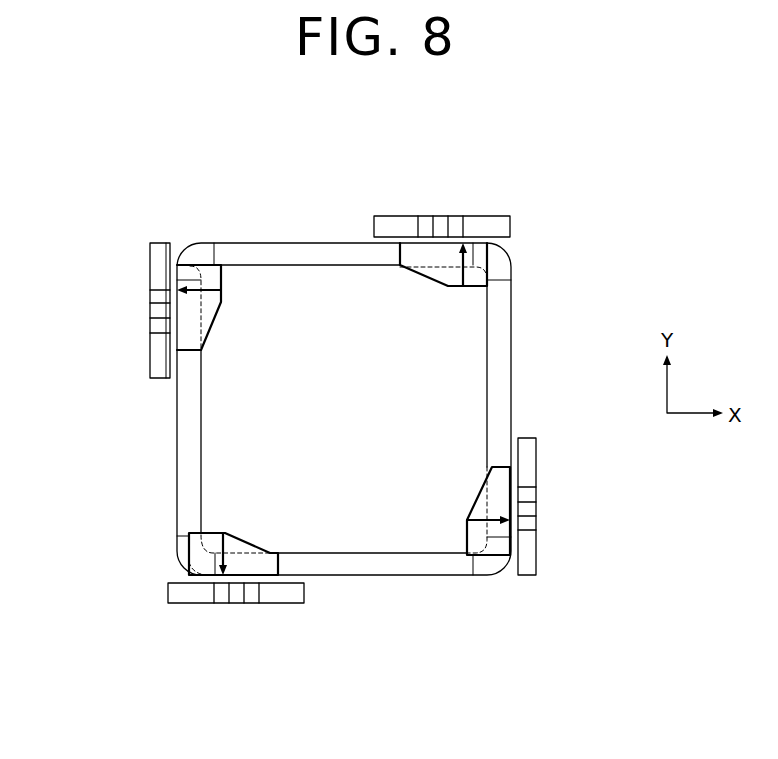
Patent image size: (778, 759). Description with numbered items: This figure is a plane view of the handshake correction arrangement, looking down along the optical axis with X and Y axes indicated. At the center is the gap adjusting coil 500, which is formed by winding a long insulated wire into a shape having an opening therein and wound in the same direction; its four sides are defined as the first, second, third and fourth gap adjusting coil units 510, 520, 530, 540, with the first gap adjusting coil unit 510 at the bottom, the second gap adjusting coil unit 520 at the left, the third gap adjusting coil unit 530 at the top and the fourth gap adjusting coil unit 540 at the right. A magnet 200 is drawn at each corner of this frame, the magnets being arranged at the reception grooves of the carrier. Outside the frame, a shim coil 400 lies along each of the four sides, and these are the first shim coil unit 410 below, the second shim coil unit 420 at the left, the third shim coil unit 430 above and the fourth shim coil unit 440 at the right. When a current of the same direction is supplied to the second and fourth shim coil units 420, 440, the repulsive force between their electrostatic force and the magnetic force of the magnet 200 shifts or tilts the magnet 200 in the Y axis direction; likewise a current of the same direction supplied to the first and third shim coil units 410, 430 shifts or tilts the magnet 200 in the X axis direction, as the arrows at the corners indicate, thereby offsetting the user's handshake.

The magnet 200 is at (228, 333).
The shim coil 400 is at (104, 310).
The first shim coil unit 410 is at (190, 598).
The second shim coil unit 420 is at (157, 357).
The third shim coil unit 430 is at (490, 222).
The fourth shim coil unit 440 is at (528, 463).
The gap adjusting coil 500 is at (344, 372).
The first gap adjusting coil unit 510 is at (362, 560).
The second gap adjusting coil unit 520 is at (195, 433).
The third gap adjusting coil unit 530 is at (327, 262).
The fourth gap adjusting coil unit 540 is at (495, 373).